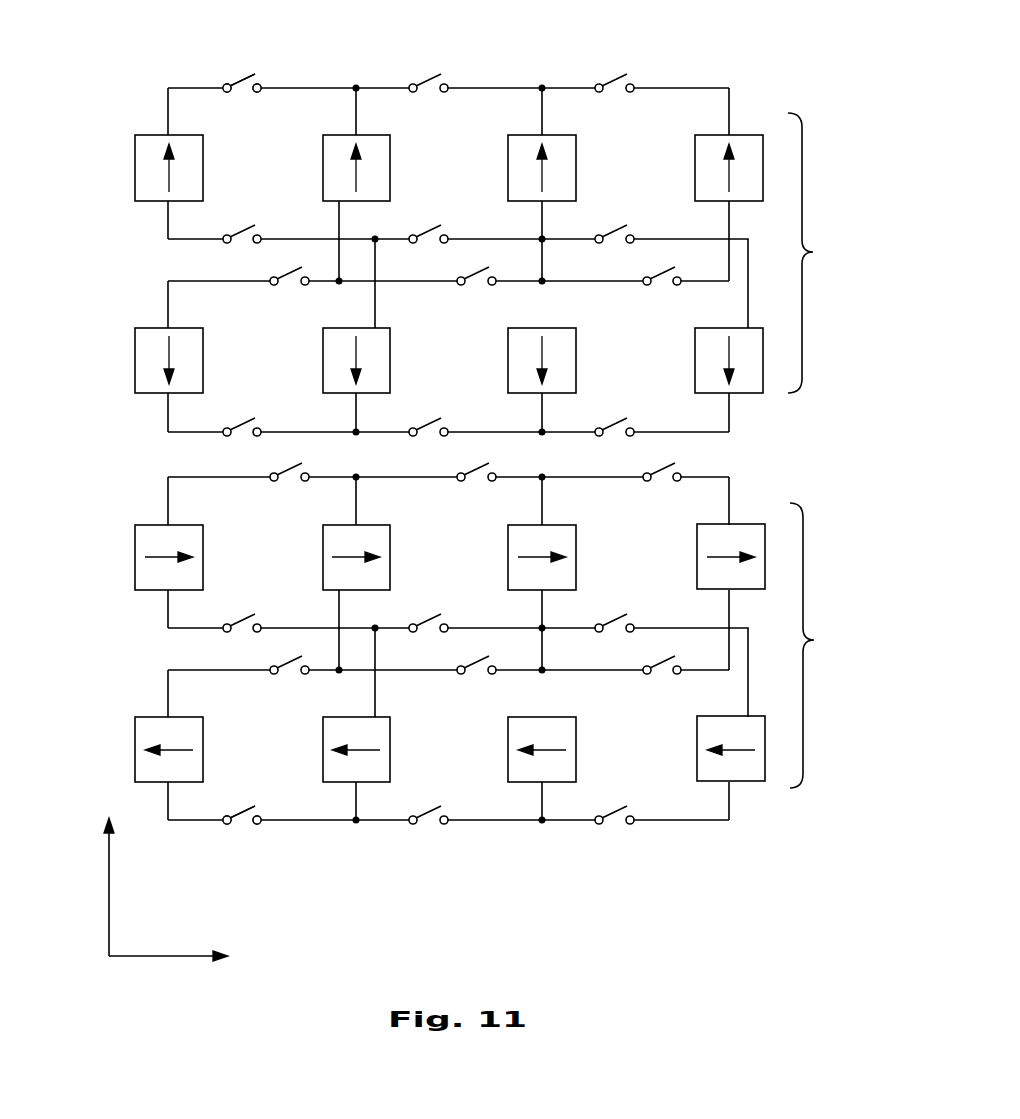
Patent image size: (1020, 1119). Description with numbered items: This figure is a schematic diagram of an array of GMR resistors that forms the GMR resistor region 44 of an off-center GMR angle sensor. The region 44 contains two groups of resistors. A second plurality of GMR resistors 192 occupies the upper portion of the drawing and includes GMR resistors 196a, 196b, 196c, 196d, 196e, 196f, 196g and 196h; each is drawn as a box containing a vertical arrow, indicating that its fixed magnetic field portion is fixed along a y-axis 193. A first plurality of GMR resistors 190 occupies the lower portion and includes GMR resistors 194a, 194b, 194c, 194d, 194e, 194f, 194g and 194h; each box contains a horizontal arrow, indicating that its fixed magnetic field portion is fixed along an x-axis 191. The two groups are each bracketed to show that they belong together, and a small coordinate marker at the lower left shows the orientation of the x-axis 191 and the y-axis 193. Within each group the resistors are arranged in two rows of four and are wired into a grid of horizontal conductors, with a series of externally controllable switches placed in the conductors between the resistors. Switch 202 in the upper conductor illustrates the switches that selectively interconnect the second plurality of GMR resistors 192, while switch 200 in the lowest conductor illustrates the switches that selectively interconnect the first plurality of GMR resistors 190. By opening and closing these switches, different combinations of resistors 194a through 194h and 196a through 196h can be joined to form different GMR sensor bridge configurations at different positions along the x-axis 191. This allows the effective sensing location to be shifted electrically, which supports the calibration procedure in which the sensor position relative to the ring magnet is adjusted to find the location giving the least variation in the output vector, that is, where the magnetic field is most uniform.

The GMR resistor region 44 is at (778, 63).
The first plurality of GMR resistors 190 is at (829, 645).
The x-axis 191 is at (148, 960).
The second plurality of GMR resistors 192 is at (827, 253).
The y-axis 193 is at (109, 888).
The GMR resistor 194a is at (203, 552).
The GMR resistor 194b is at (390, 552).
The GMR resistor 194c is at (203, 744).
The GMR resistor 194d is at (390, 744).
The GMR resistor 194e is at (576, 552).
The GMR resistor 194f is at (576, 741).
The GMR resistor 194g is at (697, 578).
The GMR resistor 194h is at (697, 774).
The GMR resistor 196a is at (203, 162).
The GMR resistor 196b is at (390, 162).
The GMR resistor 196c is at (203, 354).
The GMR resistor 196d is at (390, 354).
The GMR resistor 196e is at (576, 162).
The GMR resistor 196f is at (695, 192).
The GMR resistor 196g is at (576, 354).
The GMR resistor 196h is at (695, 385).
The switch 200 is at (247, 826).
The switch 202 is at (262, 78).